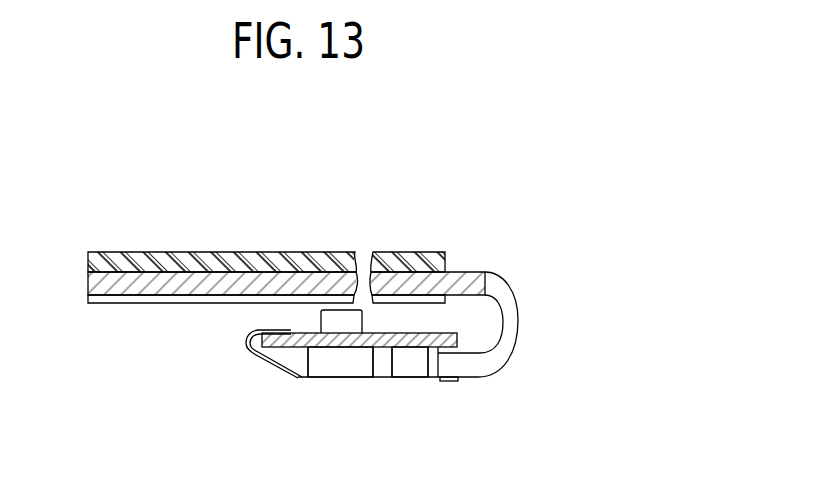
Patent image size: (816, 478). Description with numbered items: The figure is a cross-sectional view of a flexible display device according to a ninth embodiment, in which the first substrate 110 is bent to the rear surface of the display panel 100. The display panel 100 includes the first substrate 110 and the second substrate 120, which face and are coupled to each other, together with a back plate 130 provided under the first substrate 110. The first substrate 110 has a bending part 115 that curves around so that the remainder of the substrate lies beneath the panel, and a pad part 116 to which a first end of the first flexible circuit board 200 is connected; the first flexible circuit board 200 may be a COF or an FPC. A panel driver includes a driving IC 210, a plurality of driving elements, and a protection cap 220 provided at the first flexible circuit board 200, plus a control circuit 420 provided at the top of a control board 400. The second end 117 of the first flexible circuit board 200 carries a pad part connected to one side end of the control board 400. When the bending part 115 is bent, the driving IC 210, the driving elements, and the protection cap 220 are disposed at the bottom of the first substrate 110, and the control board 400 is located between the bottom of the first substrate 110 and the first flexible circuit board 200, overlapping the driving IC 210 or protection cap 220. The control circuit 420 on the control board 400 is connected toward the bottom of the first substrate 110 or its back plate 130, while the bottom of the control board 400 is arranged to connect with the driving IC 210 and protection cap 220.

The display panel 100 is at (273, 193).
The first substrate 110 is at (168, 288).
The bending part 115 is at (518, 310).
The pad part 116 is at (447, 381).
The second end 117 is at (247, 345).
The second substrate 120 is at (220, 266).
The back plate 130 is at (260, 300).
The first flexible circuit board 200 is at (371, 379).
The driving IC 210 is at (408, 363).
The protection cap 220 is at (328, 363).
The control board 400 is at (458, 338).
The control circuit 420 is at (348, 322).